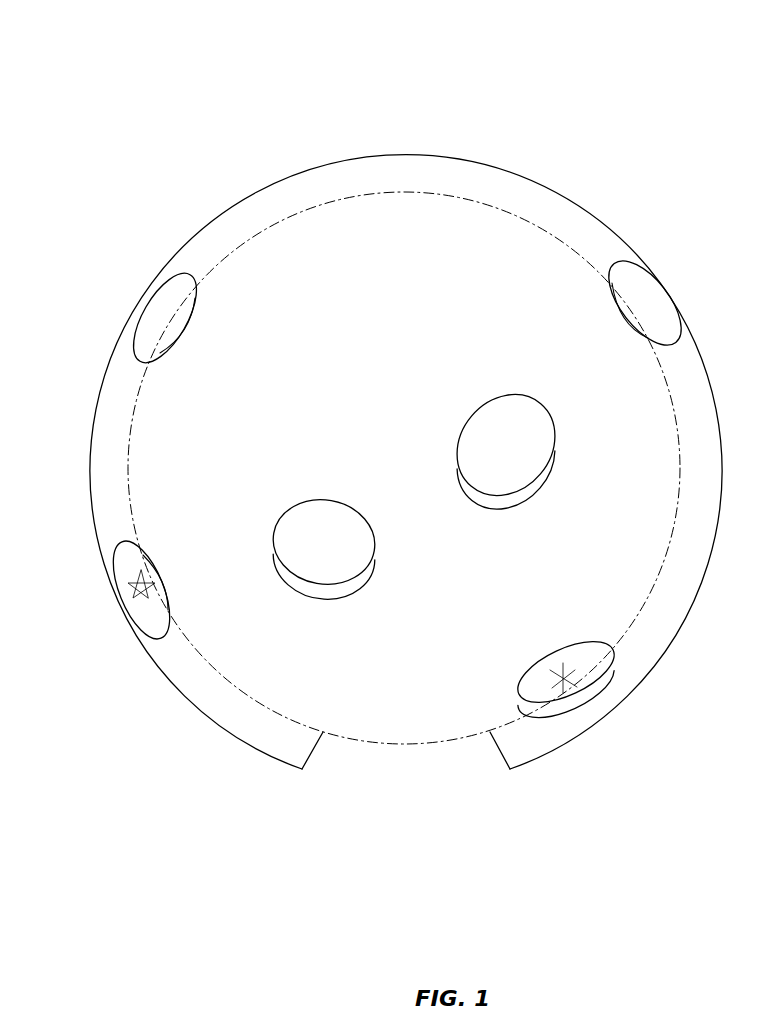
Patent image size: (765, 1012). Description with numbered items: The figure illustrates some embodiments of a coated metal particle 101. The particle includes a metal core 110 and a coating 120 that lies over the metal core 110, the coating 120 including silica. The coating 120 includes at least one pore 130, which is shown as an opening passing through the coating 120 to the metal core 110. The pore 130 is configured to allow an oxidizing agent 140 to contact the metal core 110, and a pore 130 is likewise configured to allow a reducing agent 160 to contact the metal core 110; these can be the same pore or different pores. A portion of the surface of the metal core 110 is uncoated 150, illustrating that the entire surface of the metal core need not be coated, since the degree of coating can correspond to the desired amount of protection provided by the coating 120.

The coated metal particle 101 is at (247, 127).
The metal core 110 is at (518, 365).
The coating 120 is at (610, 245).
The pore 130 is at (178, 327).
The oxidizing agent 140 is at (128, 583).
The uncoated portion of the surface of the metal core 150 is at (347, 778).
The reducing agent 160 is at (578, 683).